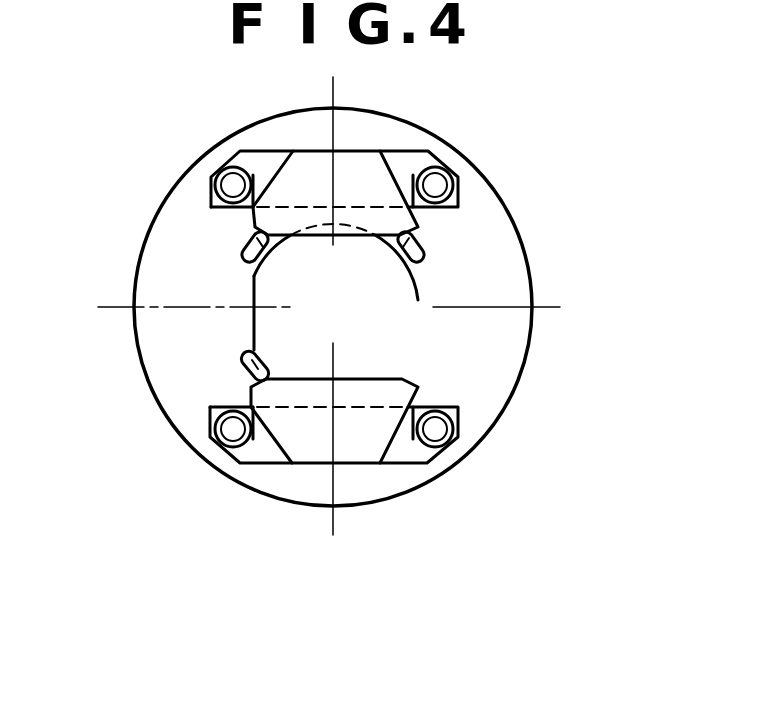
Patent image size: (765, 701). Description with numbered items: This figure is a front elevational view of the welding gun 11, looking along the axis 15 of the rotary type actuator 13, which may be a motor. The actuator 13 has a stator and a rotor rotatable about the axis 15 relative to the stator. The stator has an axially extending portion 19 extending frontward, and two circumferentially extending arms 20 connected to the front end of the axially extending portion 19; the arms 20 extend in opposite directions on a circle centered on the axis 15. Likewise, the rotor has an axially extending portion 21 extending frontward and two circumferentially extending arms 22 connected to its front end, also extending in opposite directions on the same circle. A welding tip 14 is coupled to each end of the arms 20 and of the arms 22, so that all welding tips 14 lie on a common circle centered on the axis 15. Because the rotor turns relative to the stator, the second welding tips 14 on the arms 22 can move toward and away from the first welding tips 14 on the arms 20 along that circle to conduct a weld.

The welding gun 11 is at (485, 175).
The rotary type actuator 13 is at (535, 283).
The welding tip 14 is at (242, 260).
The axis 15 is at (283, 288).
The axially extending portion 19 is at (362, 438).
The circumferentially extending arm 20 is at (242, 367).
The axially extending portion 21 is at (357, 187).
The circumferentially extending arm 22 is at (250, 242).